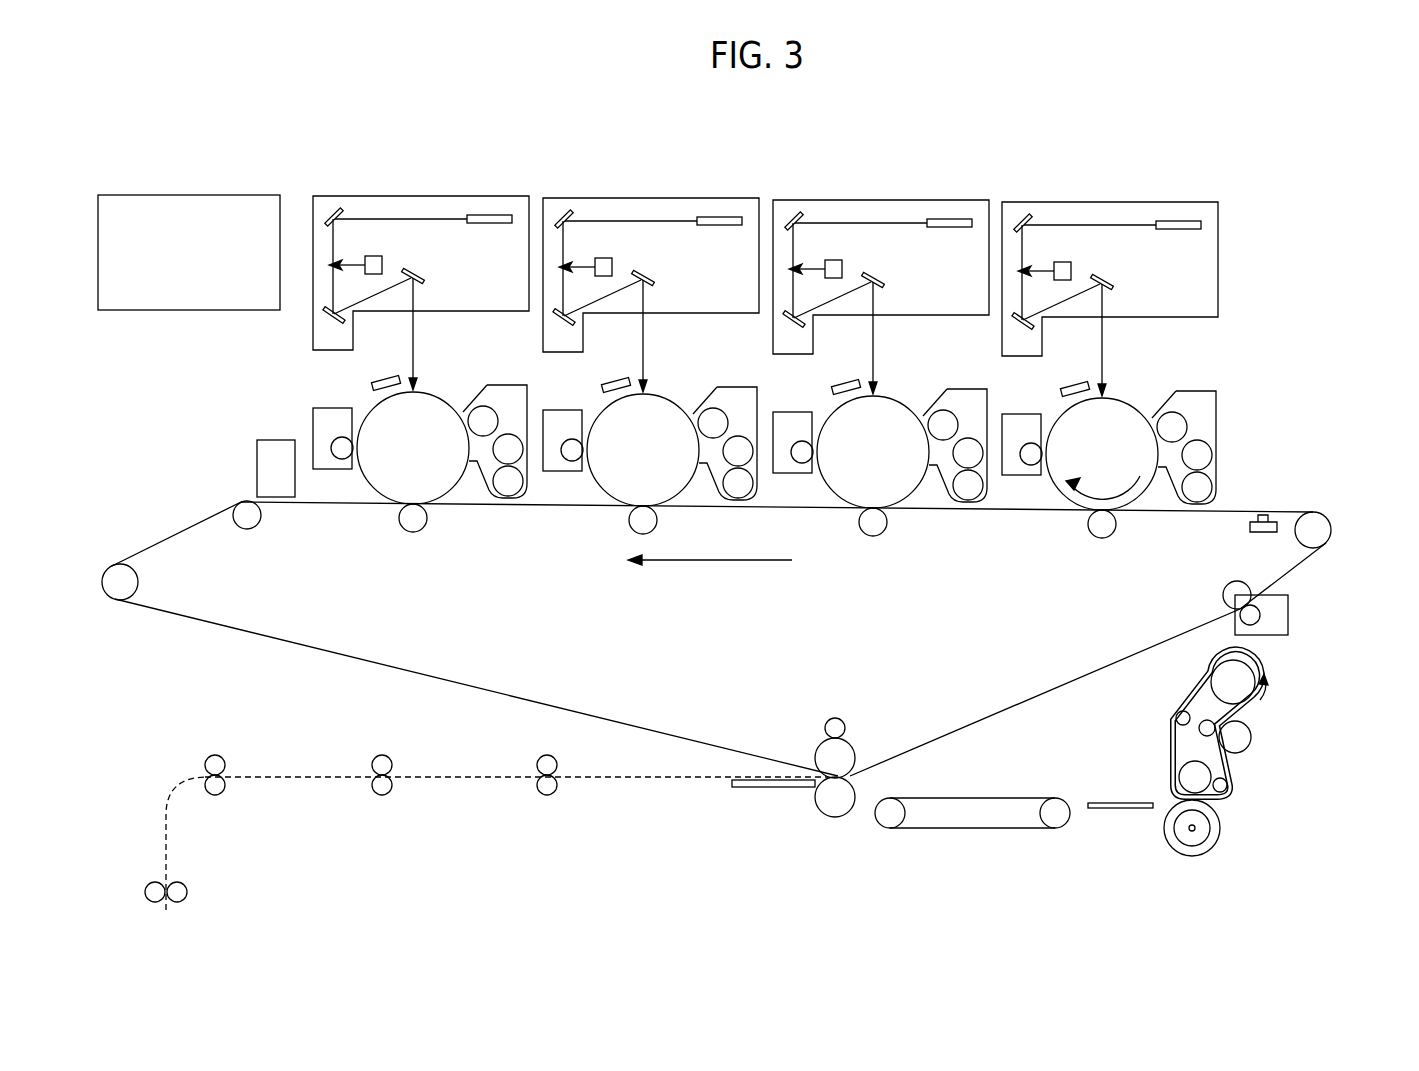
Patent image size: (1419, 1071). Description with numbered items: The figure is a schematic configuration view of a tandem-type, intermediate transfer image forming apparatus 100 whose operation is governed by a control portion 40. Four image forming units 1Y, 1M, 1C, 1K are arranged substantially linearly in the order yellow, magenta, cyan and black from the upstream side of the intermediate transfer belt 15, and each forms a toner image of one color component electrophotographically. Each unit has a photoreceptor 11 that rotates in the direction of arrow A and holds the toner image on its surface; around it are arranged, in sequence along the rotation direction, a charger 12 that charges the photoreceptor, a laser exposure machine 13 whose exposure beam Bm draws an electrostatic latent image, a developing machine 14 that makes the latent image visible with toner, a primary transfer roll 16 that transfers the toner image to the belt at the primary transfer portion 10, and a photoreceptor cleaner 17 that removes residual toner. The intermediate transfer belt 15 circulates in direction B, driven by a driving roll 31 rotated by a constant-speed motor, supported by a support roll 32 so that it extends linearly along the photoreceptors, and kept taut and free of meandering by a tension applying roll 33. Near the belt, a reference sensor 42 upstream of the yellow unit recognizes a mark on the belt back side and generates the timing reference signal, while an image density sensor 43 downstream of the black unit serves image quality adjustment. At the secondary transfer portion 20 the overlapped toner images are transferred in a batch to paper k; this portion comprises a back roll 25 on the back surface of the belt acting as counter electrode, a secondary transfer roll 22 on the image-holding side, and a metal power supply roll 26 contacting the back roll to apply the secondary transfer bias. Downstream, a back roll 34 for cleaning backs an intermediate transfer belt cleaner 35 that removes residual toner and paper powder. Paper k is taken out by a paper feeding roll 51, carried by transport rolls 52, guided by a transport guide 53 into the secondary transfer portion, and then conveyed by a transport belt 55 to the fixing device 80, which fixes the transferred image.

The image forming apparatus 100 is at (1310, 216).
The control portion 40 is at (190, 195).
The image forming unit 1K is at (413, 182).
The image forming unit 1C is at (643, 182).
The image forming unit 1M is at (873, 182).
The image forming unit 1Y is at (1123, 187).
The laser exposure machine 13 is at (1150, 279).
The exposure beam Bm is at (1144, 340).
The charger 12 is at (1020, 371).
The photoreceptor cleaner 17 is at (1021, 495).
The developing machine 14 is at (1224, 447).
The photoreceptor 11 is at (1138, 421).
The rotation direction of photoreceptor A is at (1103, 460).
The primary transfer roll 16 is at (1100, 563).
The primary transfer portion 10 is at (719, 639).
The intermediate transfer belt 15 is at (598, 716).
The belt circulation direction B is at (710, 577).
The tension applying roll 33 is at (139, 588).
The support roll 32 is at (253, 529).
The image density sensor 43 is at (257, 455).
The driving roll 31 is at (1332, 530).
The reference sensor 42 is at (1262, 534).
The back roll for cleaning 34 is at (1224, 588).
The intermediate transfer belt cleaner 35 is at (1289, 622).
The secondary transfer portion 20 is at (870, 768).
The power supply roll 26 is at (833, 717).
The back roll 25 is at (854, 742).
The secondary transfer roll 22 is at (835, 818).
The transport guide 53 is at (747, 789).
The paper k is at (497, 846).
The transport roll 52 is at (322, 833).
The paper feeding roll 51 is at (201, 895).
The transport belt 55 is at (976, 830).
The fixing device 80 is at (1244, 819).